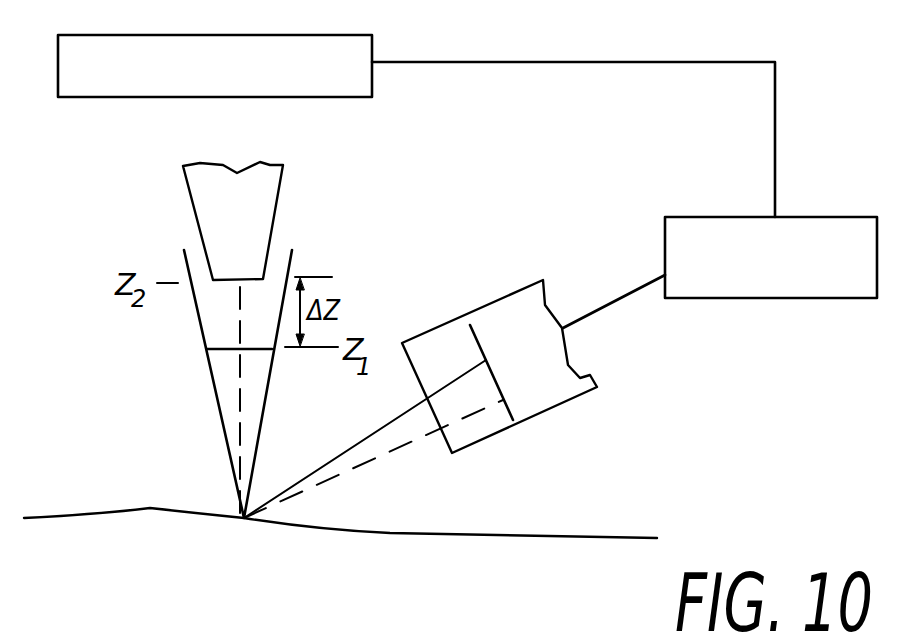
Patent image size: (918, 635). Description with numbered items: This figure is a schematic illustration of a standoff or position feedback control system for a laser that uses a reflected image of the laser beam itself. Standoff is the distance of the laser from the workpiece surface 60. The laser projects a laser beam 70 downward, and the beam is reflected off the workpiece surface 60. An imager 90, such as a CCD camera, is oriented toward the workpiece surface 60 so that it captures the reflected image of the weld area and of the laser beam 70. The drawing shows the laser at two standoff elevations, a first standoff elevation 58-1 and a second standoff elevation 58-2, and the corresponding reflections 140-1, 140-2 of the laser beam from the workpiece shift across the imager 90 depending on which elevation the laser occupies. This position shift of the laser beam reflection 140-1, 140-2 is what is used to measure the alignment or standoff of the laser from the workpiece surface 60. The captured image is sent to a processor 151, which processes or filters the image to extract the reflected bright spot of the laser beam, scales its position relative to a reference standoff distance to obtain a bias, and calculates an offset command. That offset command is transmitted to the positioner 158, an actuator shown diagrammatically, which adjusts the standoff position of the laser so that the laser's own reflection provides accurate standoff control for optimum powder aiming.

The positioner 158 is at (342, 35).
The processor 151 is at (810, 216).
The laser at second standoff elevation 58-2 is at (245, 282).
The laser at first standoff elevation 58-1 is at (223, 350).
The laser beam 70 is at (252, 424).
The workpiece surface 60 is at (547, 537).
The imager 90 is at (518, 338).
The first laser beam reflection 140-1 is at (483, 361).
The second laser beam reflection 140-2 is at (493, 410).